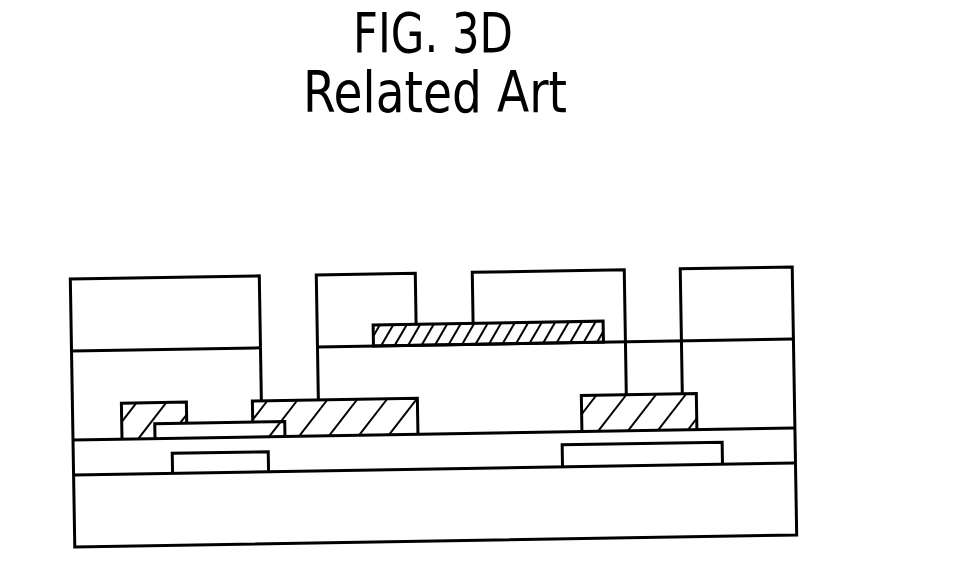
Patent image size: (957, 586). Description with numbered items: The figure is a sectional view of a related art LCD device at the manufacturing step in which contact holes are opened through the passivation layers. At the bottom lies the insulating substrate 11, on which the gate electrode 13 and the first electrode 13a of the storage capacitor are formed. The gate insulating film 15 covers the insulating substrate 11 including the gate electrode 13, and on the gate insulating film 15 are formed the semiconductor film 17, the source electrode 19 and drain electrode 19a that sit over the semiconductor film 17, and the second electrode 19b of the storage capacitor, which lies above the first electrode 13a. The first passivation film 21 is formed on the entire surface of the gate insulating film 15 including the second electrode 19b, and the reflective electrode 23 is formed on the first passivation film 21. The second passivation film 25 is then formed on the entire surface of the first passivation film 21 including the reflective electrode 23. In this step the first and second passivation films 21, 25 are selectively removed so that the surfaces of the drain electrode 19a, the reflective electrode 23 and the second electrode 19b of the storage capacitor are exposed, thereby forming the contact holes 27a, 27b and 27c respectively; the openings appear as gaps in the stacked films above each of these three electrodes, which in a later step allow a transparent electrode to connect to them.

The insulating substrate 11 is at (797, 509).
The gate electrode 13 is at (222, 476).
The first electrode of the storage capacitor 13a is at (662, 476).
The gate insulating film 15 is at (797, 454).
The semiconductor film 17 is at (219, 425).
The source electrode 19 is at (132, 404).
The drain electrode 19a is at (420, 416).
The second electrode of the storage capacitor 19b is at (699, 415).
The first passivation film 21 is at (797, 390).
The reflective electrode 23 is at (520, 351).
The second passivation film 25 is at (797, 312).
The contact hole 27a is at (292, 292).
The contact hole 27b is at (450, 294).
The contact hole 27c is at (657, 293).